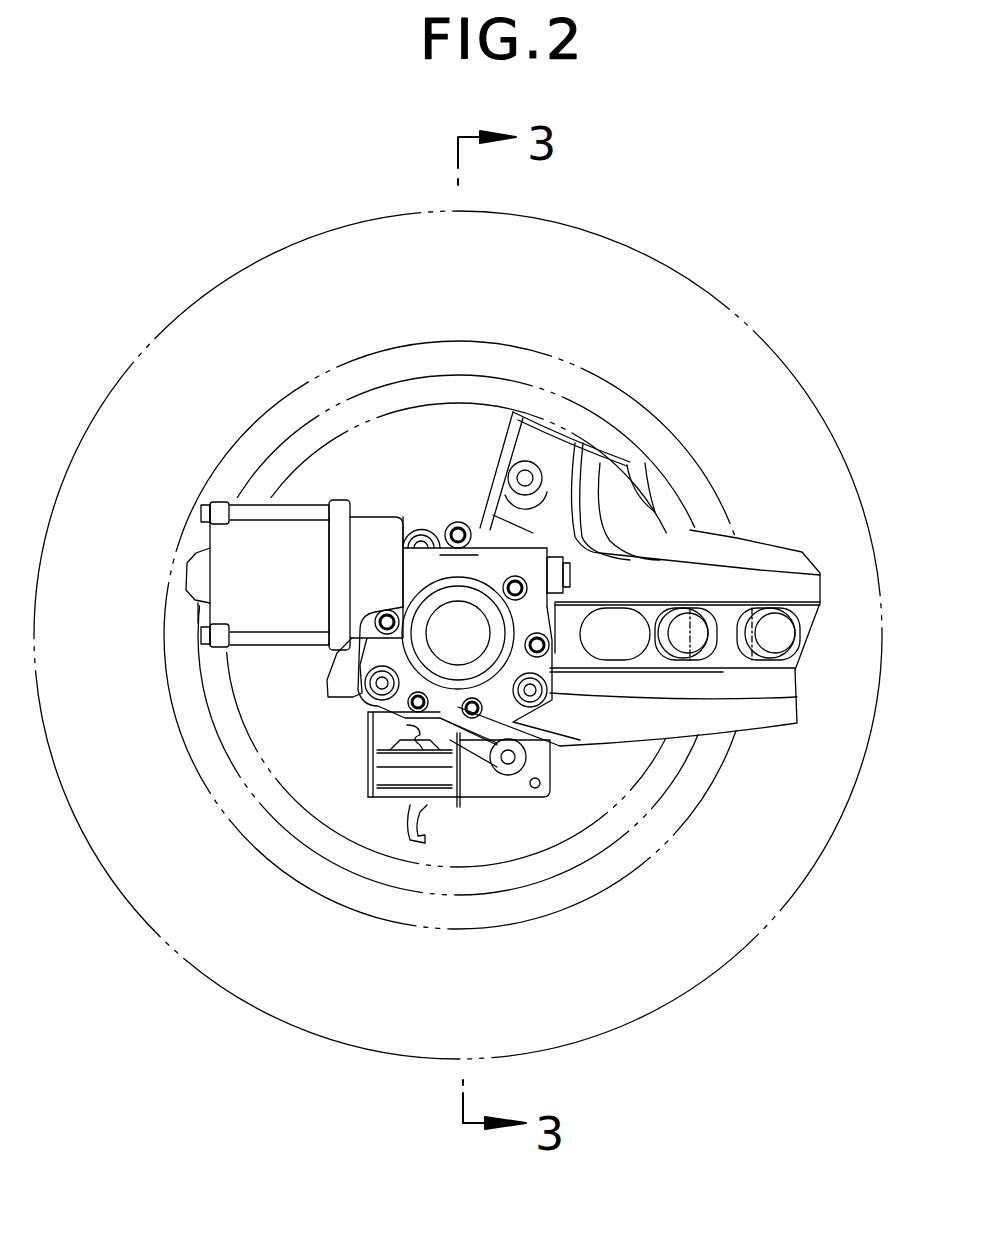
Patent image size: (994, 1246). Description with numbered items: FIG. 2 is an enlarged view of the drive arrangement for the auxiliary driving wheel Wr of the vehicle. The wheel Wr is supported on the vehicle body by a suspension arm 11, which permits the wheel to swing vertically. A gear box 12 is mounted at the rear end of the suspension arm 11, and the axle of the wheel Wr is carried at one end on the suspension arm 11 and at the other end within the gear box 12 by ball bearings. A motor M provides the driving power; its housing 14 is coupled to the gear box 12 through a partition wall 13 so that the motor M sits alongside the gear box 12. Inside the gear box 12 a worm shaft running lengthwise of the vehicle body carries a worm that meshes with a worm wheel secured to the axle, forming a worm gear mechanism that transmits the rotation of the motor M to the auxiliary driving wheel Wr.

The auxiliary driving wheel Wr is at (750, 324).
The suspension arm 11 is at (760, 560).
The gear box 12 is at (417, 567).
The partition wall 13 is at (345, 503).
The housing 14 is at (277, 607).
The motor M is at (252, 587).